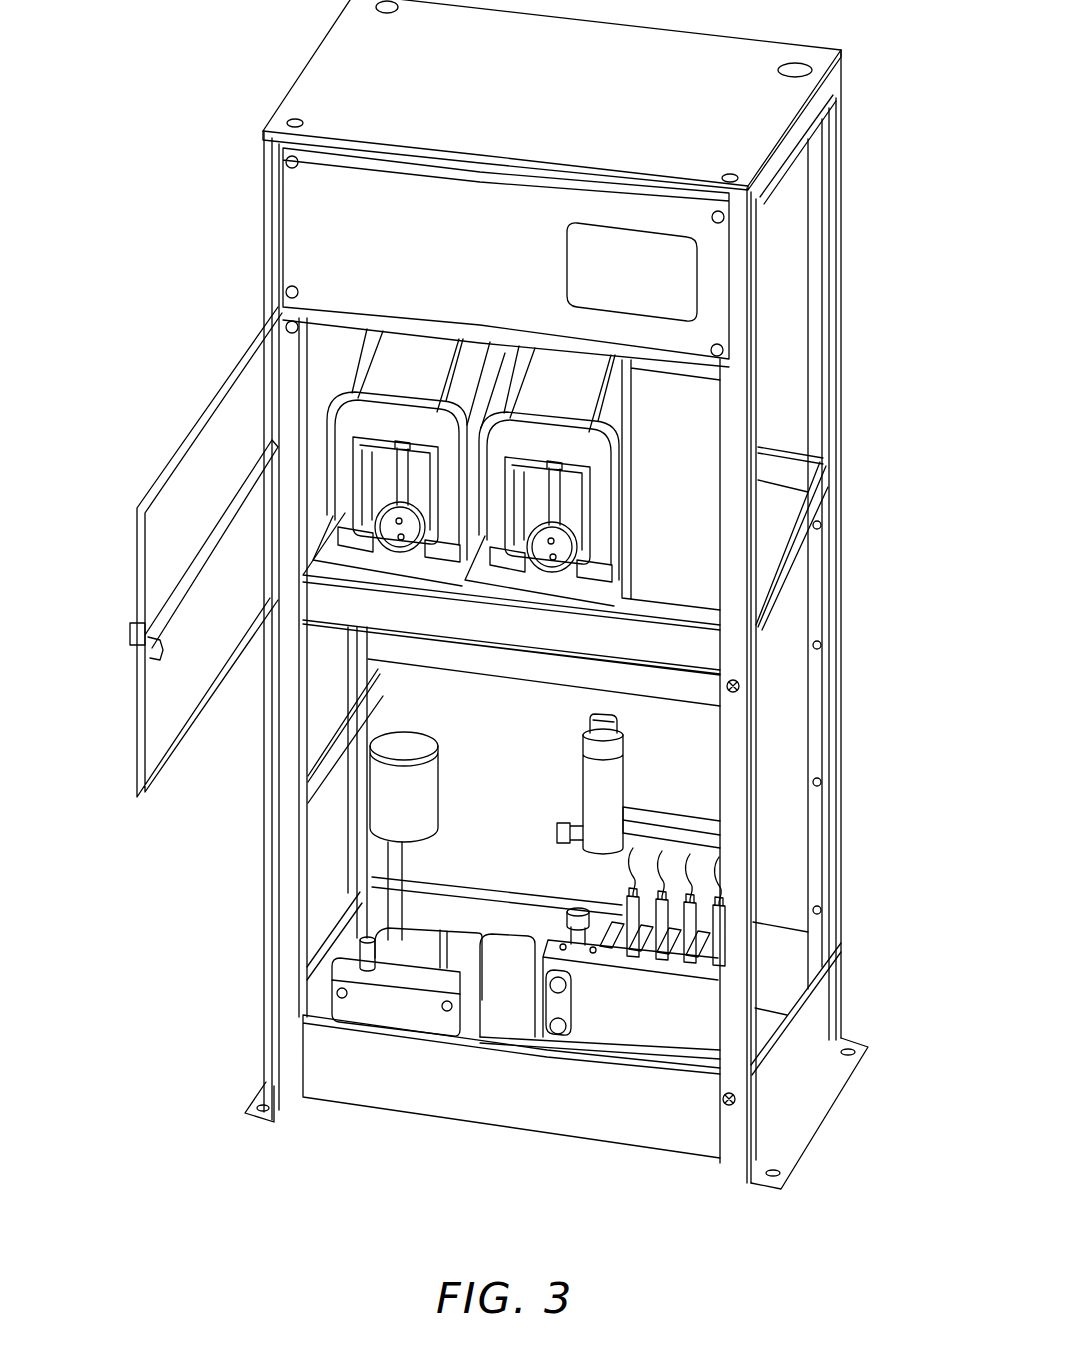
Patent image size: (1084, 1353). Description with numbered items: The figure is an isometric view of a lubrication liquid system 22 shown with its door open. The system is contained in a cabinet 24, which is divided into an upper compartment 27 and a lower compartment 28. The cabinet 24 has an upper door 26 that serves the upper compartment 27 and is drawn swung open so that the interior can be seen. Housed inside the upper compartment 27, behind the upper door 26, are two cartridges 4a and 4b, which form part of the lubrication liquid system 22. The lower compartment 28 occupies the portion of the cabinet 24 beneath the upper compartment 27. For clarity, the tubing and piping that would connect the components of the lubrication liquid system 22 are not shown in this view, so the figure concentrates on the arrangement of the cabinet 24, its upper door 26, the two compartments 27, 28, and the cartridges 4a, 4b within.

The lubrication liquid system 22 is at (897, 66).
The cabinet 24 is at (304, 73).
The upper door 26 is at (133, 582).
The upper compartment 27 is at (612, 548).
The lower compartment 28 is at (674, 747).
The cartridge 4a is at (353, 392).
The cartridge 4b is at (578, 450).